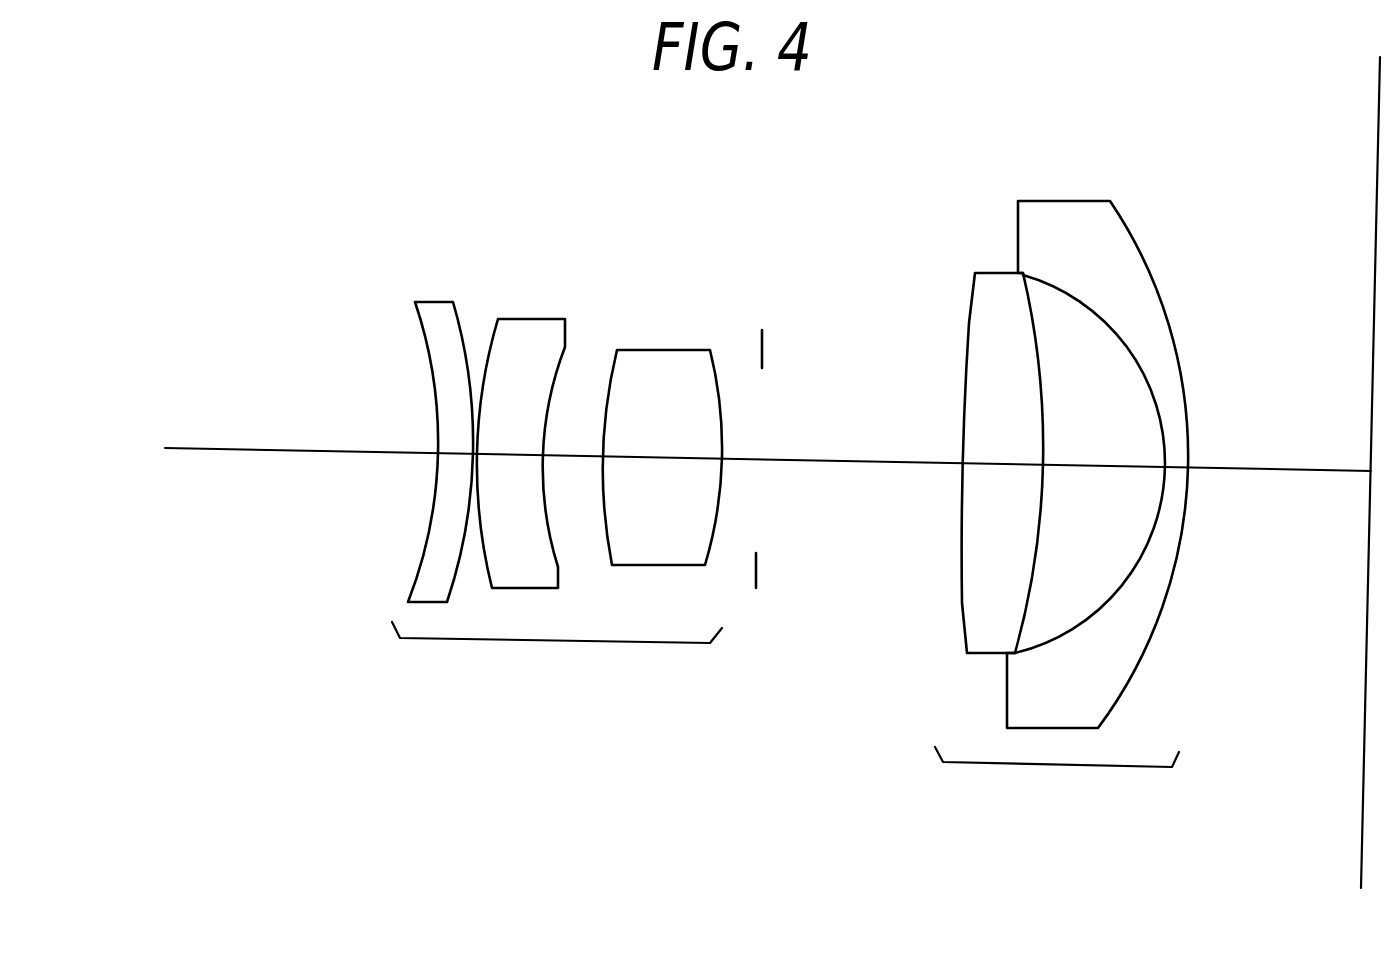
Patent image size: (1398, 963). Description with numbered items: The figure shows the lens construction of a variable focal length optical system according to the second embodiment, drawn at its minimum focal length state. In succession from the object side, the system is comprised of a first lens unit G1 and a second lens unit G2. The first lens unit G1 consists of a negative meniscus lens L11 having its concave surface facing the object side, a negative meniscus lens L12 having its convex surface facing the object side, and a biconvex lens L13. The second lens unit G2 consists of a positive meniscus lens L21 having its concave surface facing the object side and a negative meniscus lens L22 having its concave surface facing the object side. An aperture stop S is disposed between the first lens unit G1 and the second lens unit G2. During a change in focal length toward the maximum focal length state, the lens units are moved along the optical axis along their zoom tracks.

The negative meniscus lens L11 is at (437, 300).
The negative meniscus lens L12 is at (527, 318).
The biconvex lens L13 is at (658, 350).
The aperture stop S is at (761, 438).
The positive meniscus lens L21 is at (990, 273).
The negative meniscus lens L22 is at (1073, 202).
The first lens unit G1 is at (557, 652).
The second lens unit G2 is at (1057, 777).